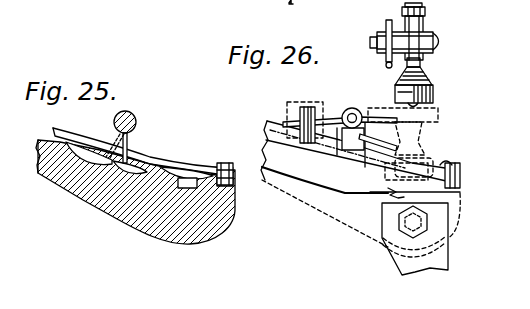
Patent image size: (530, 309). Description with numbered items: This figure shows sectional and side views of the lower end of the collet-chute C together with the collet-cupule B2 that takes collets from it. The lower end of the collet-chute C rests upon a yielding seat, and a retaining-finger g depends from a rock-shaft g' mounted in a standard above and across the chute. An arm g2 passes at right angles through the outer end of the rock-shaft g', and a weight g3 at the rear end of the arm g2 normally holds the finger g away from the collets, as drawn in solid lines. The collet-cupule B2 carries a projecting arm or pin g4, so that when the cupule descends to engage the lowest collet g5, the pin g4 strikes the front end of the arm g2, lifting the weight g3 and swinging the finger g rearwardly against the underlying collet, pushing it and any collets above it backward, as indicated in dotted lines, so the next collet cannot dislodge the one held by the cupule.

In FIG. 25, the collet-chute C is at (142, 192).
In FIG. 26, the collet-chute C is at (360, 197).
In FIG. 25, the retaining-finger g is at (126, 148).
In FIG. 25, the rock-shaft g' is at (133, 117).
In FIG. 26, the rock-shaft g' is at (390, 132).
In FIG. 26, the arm g2 is at (290, 122).
In FIG. 26, the weight g3 is at (305, 115).
In FIG. 26, the projecting arm or pin g4 is at (374, 47).
In FIG. 25, the lowest collet g5 is at (175, 168).
In FIG. 26, the collet-cupule B2 is at (411, 55).